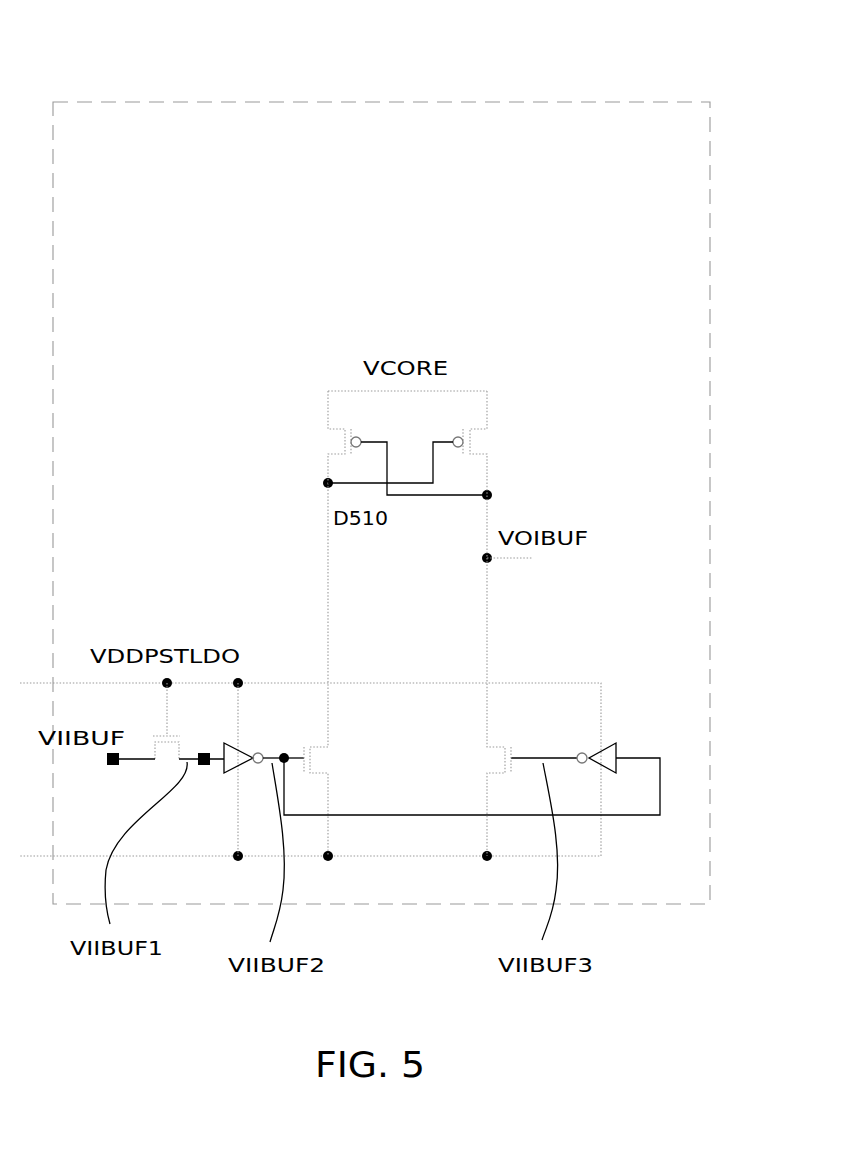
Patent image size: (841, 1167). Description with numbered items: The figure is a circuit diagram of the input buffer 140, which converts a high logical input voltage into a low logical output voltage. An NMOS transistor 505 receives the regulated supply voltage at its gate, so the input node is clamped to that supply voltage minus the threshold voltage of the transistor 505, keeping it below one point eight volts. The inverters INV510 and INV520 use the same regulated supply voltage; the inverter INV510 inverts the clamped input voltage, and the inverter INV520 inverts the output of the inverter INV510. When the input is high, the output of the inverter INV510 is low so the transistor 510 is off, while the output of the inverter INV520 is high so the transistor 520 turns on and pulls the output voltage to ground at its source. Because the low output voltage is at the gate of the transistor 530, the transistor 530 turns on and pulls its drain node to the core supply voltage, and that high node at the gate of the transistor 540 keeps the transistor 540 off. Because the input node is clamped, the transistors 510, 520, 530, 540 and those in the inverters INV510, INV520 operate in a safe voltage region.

The input buffer 140 is at (410, 25).
The NMOS transistor 505 is at (155, 736).
The transistor 510 is at (328, 669).
The transistor 520 is at (512, 707).
The transistor 530 is at (386, 443).
The transistor 540 is at (430, 474).
The inverter INV510 is at (234, 777).
The inverter INV520 is at (614, 743).